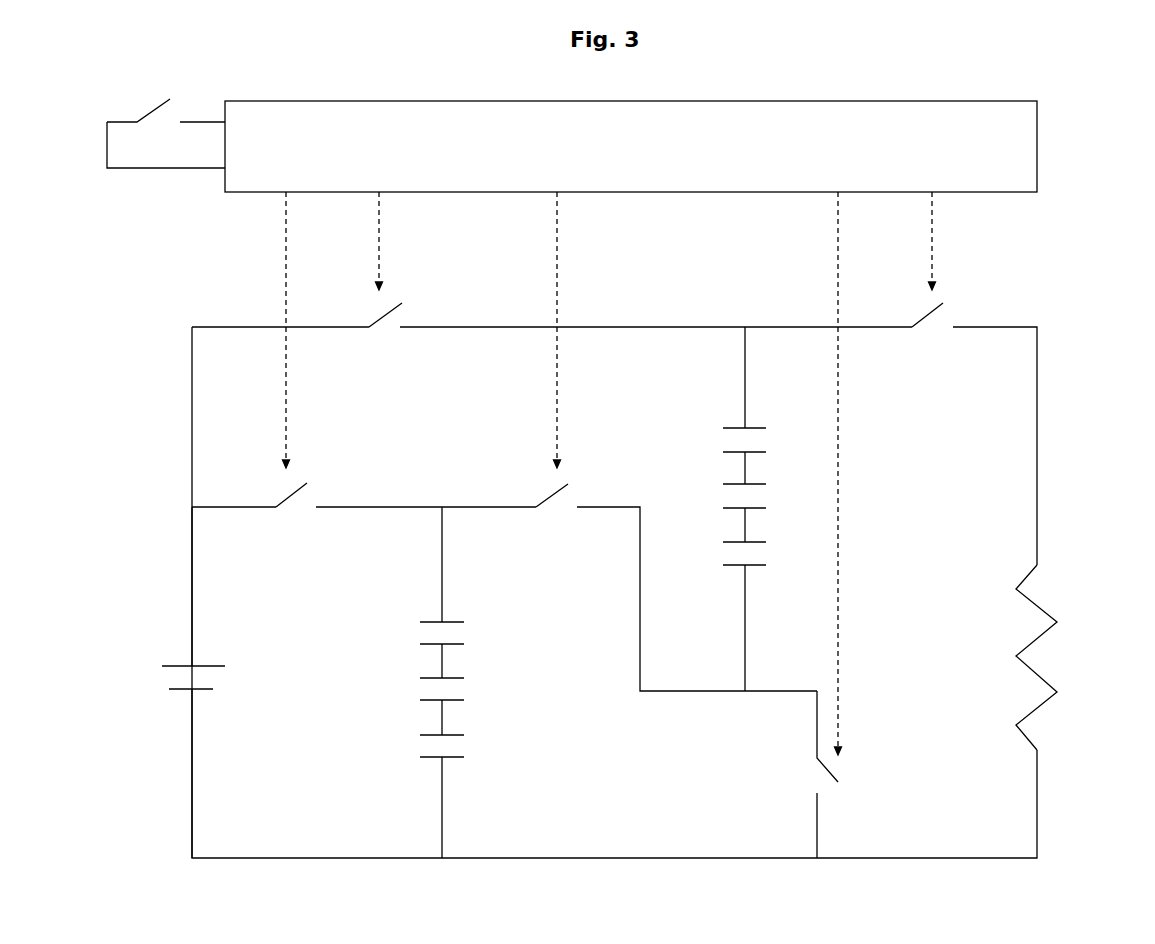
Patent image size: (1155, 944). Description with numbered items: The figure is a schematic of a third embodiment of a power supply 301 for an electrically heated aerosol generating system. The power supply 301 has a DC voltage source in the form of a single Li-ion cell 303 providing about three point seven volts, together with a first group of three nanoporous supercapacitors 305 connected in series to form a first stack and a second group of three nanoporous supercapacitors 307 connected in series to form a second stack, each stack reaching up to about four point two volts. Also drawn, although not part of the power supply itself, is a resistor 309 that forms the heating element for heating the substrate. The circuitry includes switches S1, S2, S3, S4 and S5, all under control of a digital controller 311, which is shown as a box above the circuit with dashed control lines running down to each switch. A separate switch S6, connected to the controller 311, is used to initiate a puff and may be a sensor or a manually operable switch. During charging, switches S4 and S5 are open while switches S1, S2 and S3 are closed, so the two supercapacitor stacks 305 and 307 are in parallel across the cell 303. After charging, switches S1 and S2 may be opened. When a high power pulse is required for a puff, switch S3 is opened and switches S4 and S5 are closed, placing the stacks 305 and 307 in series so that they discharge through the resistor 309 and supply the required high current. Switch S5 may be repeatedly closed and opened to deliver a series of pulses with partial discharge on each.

The power supply 301 is at (158, 358).
The Li-ion cell 303 is at (149, 711).
The first group of nanoporous supercapacitors 305 is at (410, 633).
The second group of nanoporous supercapacitors 307 is at (722, 438).
The resistor 309 is at (1067, 612).
The digital controller 311 is at (626, 157).
The switch S1 is at (385, 281).
The switch S2 is at (291, 372).
The switch S3 is at (811, 525).
The switch S4 is at (552, 372).
The switch S5 is at (928, 282).
The switch S6 is at (166, 124).